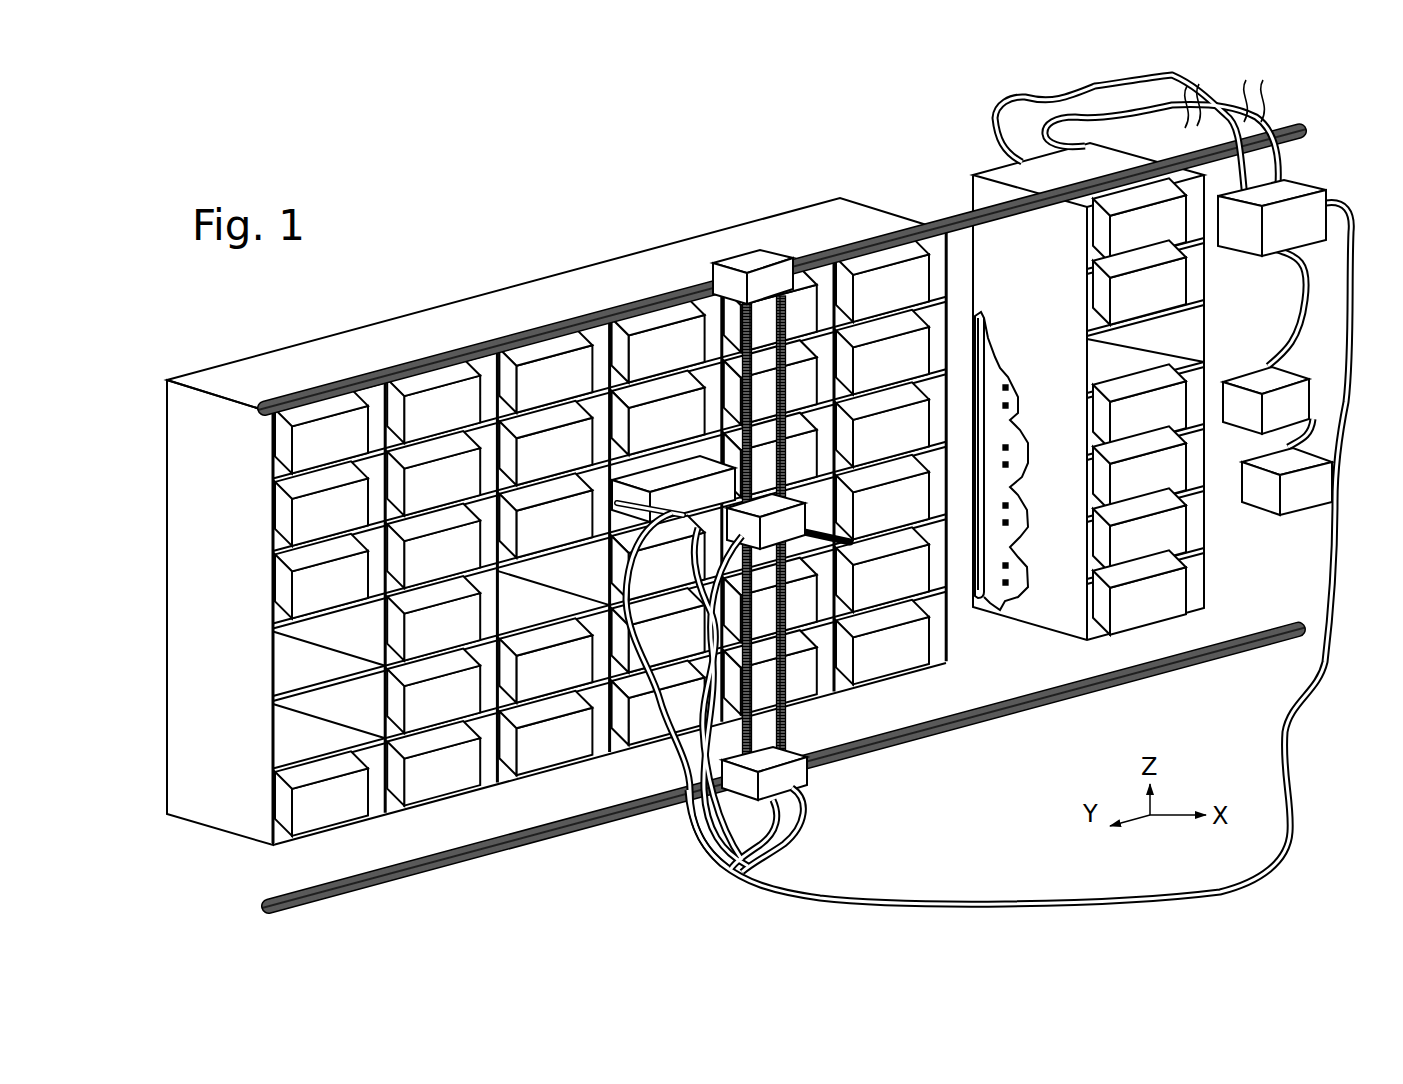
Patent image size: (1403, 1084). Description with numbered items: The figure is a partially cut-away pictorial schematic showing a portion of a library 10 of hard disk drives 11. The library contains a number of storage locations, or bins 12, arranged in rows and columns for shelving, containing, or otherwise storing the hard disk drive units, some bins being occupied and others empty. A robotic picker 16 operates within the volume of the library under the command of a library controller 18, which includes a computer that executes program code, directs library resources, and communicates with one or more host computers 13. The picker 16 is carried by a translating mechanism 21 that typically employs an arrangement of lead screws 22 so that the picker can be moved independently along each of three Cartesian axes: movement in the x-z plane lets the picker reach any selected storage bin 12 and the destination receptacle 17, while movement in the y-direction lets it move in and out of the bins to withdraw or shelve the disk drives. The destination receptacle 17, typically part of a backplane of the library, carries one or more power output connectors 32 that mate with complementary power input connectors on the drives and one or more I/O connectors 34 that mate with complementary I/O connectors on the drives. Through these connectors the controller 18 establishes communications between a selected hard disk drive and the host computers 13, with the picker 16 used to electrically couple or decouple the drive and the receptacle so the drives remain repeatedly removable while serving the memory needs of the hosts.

The library 10 is at (490, 205).
The hard disk drives 11 is at (436, 413).
The storage locations (bins) 12 is at (352, 626).
The host computers 13 is at (1300, 419).
The robotic picker 16 is at (692, 548).
The destination receptacle 17 is at (988, 332).
The library controller 18 is at (1310, 235).
The translating mechanism 21 is at (710, 212).
The lead screws 22 is at (843, 528).
The power output connectors 32 is at (1194, 340).
The I/O connectors 34 is at (1003, 447).